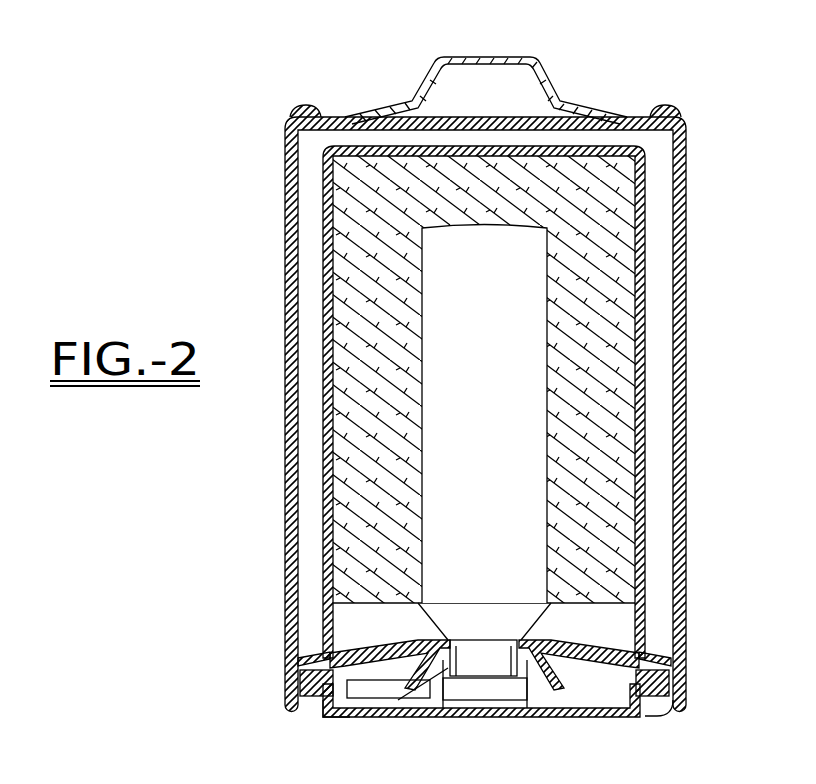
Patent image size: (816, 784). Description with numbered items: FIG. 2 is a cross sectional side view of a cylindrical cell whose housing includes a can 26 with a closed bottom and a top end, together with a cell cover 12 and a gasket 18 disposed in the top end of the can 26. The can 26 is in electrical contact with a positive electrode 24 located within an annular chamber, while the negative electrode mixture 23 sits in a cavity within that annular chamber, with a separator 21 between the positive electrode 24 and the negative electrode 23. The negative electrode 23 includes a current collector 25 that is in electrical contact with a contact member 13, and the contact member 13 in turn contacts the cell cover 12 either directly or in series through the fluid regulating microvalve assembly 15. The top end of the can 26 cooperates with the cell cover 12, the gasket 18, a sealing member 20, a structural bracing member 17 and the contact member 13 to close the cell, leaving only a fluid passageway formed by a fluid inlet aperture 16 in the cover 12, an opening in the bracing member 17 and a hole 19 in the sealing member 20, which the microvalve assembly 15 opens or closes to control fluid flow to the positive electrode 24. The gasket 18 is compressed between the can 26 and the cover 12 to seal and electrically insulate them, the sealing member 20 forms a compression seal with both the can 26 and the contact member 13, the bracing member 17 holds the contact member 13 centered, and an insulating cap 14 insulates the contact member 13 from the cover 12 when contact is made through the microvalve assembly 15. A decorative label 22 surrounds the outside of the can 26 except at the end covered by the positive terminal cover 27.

The cell cover 12 is at (592, 716).
The contact member 13 is at (503, 692).
The insulating cap 14 is at (487, 703).
The fluid regulating microvalve assembly 15 is at (388, 695).
The fluid inlet aperture 16 is at (647, 717).
The structural bracing member 17 is at (350, 712).
The gasket 18 is at (300, 683).
The hole 19 is at (325, 658).
The sealing member 20 is at (328, 637).
The separator 21 is at (645, 250).
The decorative label 22 is at (682, 375).
The negative electrode mixture 23 is at (620, 337).
The positive electrode 24 is at (658, 297).
The current collector 25 is at (498, 283).
The can 26 is at (297, 143).
The positive terminal cover 27 is at (425, 86).